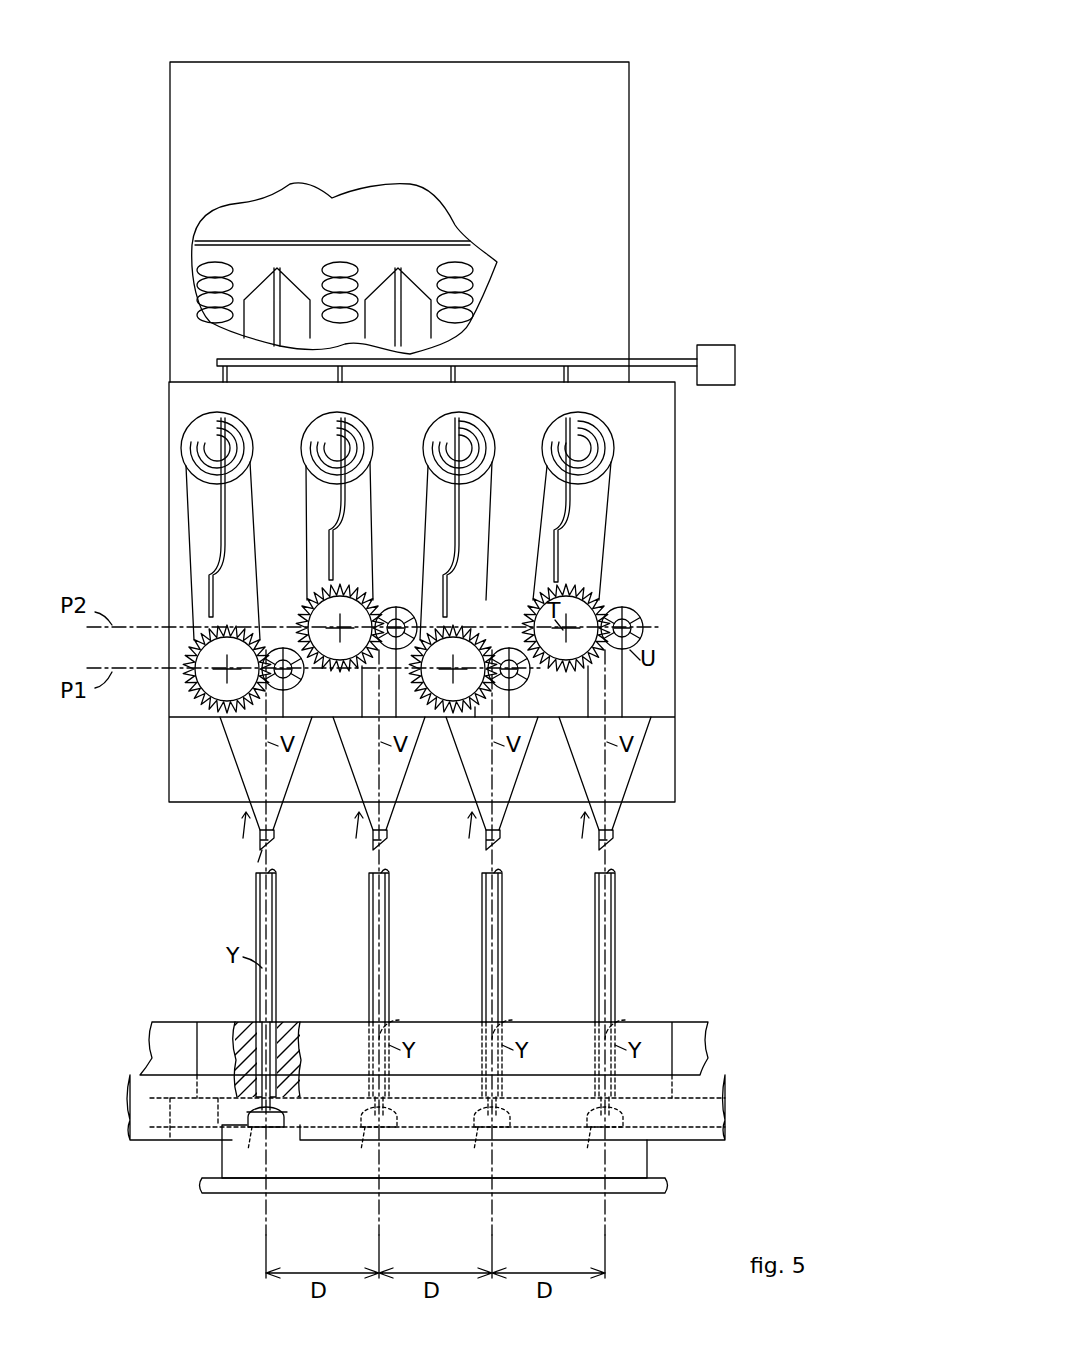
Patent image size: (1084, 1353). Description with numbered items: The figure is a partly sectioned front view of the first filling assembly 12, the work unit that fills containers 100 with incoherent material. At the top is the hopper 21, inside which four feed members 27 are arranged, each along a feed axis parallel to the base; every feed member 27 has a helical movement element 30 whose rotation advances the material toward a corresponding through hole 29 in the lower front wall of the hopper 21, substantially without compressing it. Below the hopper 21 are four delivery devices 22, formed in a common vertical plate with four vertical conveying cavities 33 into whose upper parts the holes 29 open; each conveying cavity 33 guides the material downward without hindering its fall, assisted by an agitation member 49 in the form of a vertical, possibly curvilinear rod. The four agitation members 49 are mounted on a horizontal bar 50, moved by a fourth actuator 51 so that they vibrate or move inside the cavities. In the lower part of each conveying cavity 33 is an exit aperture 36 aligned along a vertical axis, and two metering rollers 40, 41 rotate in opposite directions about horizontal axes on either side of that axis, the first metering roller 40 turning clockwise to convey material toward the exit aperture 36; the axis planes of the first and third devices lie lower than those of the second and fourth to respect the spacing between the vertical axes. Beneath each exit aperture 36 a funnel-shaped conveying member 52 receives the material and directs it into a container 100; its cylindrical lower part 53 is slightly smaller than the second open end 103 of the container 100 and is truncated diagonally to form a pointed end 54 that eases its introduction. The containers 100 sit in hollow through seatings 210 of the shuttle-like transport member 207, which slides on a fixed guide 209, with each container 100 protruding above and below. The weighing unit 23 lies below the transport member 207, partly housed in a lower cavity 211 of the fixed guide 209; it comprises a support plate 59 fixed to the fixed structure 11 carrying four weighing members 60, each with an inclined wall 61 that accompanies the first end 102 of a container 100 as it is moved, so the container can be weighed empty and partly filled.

The first filling assembly 12 is at (718, 42).
The hopper 21 is at (612, 157).
The feed members 27 is at (245, 274).
The horizontal bar 50 is at (660, 359).
The fourth actuator 51 is at (736, 358).
The movement element 30 is at (236, 438).
The through holes 29 is at (243, 458).
The conveying cavities 33 is at (248, 515).
The agitation member 49 is at (214, 586).
The first metering roller 40 is at (207, 683).
The second metering roller 41 is at (398, 607).
The exit aperture 36 is at (270, 705).
The conveying member 52 is at (285, 775).
The lower part 53 is at (275, 842).
The delivery devices 22 is at (409, 839).
The pointed end 54 is at (262, 858).
The second open end 103 is at (276, 872).
The container 100 is at (278, 945).
The seatings 210 is at (270, 1015).
The transport member 207 is at (155, 1022).
The fixed guide 209 is at (726, 1088).
The lower cavity 211 is at (700, 1122).
The inclined wall 61 is at (252, 1120).
The first end 102 is at (282, 1118).
The weighing members 60 is at (415, 1150).
The support plate 59 is at (642, 1158).
The weighing unit 23 is at (680, 1180).
The fixed structure 11 is at (648, 1192).